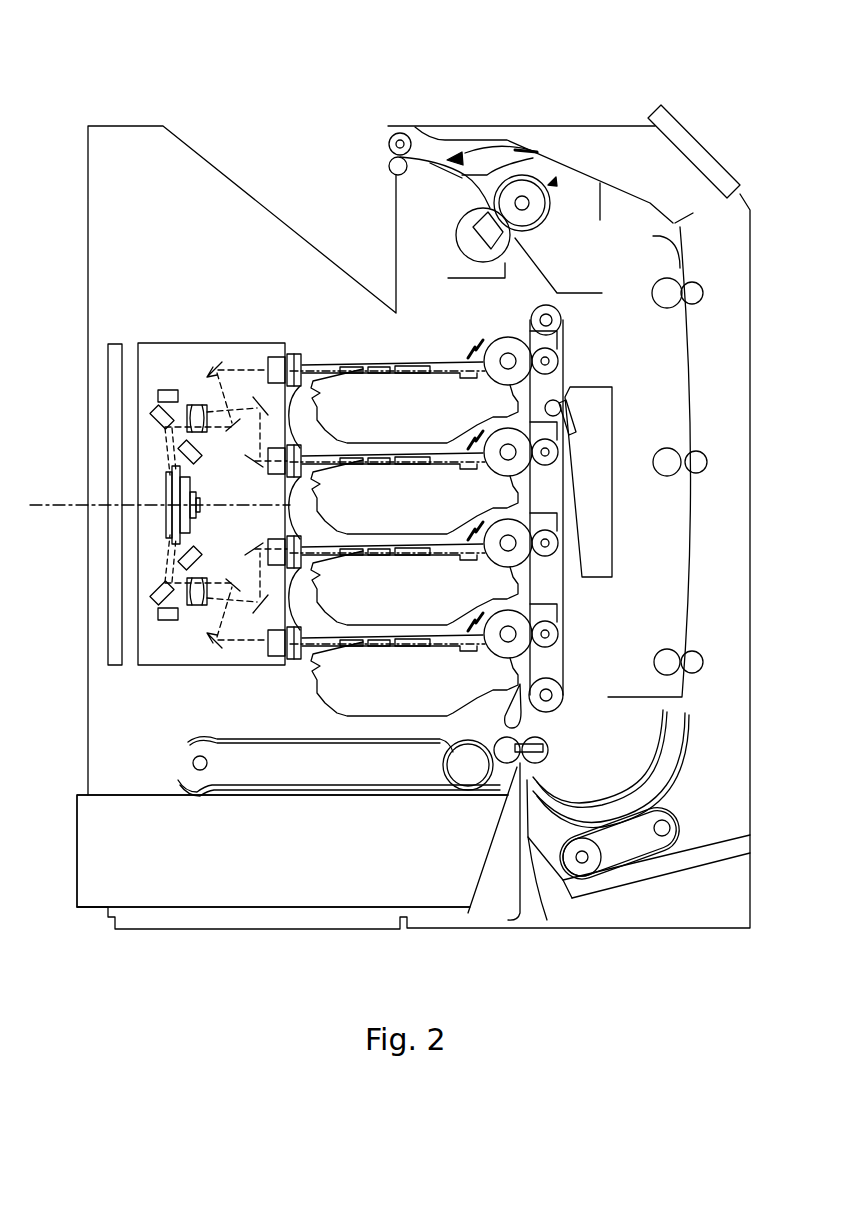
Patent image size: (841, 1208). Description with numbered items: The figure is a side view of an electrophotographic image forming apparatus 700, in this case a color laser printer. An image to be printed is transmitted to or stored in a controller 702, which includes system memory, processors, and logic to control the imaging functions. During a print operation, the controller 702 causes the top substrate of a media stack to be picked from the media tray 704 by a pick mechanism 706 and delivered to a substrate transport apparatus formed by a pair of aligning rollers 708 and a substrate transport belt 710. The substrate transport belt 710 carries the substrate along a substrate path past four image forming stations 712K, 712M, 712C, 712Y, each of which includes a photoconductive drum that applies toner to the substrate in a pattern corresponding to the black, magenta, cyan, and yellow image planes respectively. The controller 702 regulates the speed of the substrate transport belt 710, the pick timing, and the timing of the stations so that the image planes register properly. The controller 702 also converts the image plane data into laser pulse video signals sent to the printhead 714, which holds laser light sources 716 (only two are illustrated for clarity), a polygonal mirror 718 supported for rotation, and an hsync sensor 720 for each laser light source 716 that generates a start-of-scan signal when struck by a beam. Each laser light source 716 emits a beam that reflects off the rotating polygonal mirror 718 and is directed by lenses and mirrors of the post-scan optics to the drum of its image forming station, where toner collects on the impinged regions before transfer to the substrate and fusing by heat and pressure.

The electrophotographic image forming apparatus 700 is at (128, 27).
The controller 702 is at (120, 395).
The media tray 704 is at (107, 838).
The pick mechanism 706 is at (460, 778).
The aligning rollers 708 is at (535, 745).
The substrate transport belt 710 is at (570, 620).
The image forming station 712K is at (577, 363).
The image forming station 712M is at (542, 477).
The image forming station 712C is at (547, 560).
The image forming station 712Y is at (535, 650).
The printhead 714 is at (248, 360).
The laser light source 716 is at (195, 460).
The polygonal mirror 718 is at (163, 522).
The hsync sensor 720 is at (163, 390).